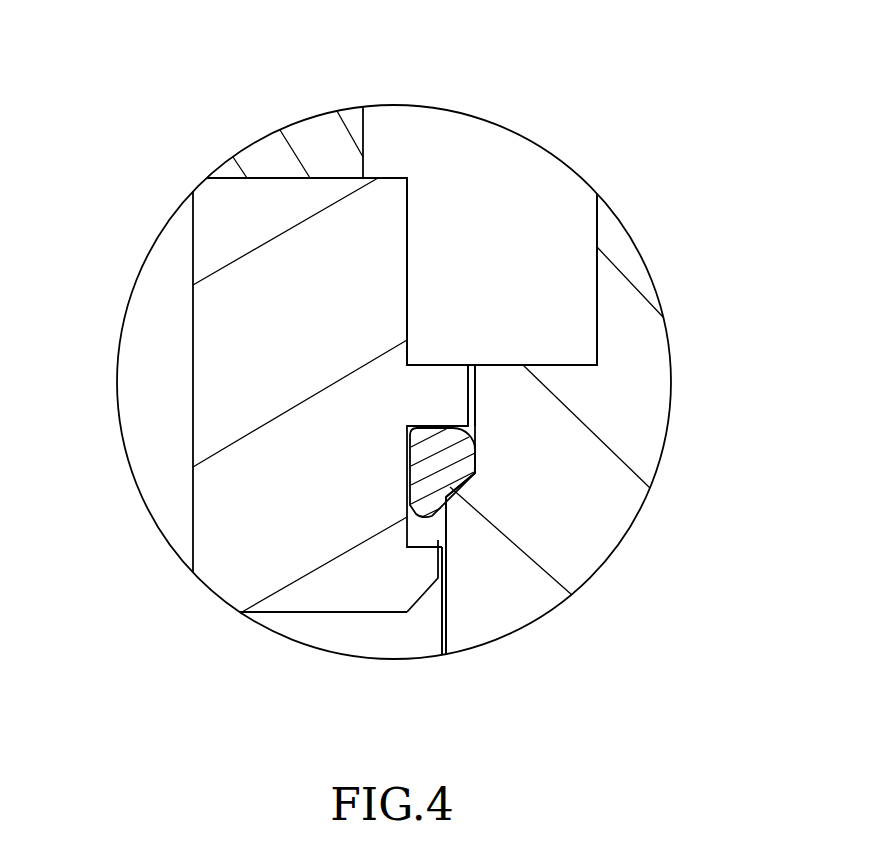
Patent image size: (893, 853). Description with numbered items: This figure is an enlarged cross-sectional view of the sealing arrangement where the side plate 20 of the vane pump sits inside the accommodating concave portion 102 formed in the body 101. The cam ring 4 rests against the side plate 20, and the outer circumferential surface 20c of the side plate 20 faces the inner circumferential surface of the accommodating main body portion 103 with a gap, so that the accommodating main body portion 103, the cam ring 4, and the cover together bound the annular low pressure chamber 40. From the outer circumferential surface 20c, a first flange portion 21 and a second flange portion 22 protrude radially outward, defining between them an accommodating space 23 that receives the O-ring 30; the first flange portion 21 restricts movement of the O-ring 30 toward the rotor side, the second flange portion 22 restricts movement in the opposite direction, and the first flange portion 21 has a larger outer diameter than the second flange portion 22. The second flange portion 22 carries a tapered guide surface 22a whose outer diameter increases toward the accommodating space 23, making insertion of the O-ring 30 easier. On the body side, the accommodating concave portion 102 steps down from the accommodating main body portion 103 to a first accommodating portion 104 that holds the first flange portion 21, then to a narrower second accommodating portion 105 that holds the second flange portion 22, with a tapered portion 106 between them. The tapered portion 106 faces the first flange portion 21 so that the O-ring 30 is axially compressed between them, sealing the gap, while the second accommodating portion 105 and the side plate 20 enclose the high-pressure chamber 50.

The cam ring 4 is at (315, 155).
The side plate 20 is at (247, 242).
The outer circumferential surface 20c is at (408, 233).
The first flange portion 21 is at (442, 393).
The second flange portion 22 is at (418, 558).
The guide surface 22a is at (445, 630).
The accommodating space 23 is at (452, 527).
The O-ring 30 is at (443, 462).
The low pressure chamber 40 is at (482, 155).
The high-pressure chamber 50 is at (357, 628).
The body 101 is at (613, 330).
The accommodating concave portion 102 is at (597, 241).
The accommodating main body portion 103 is at (591, 286).
The first accommodating portion 104 is at (466, 387).
The second accommodating portion 105 is at (440, 552).
The tapered portion 106 is at (455, 488).